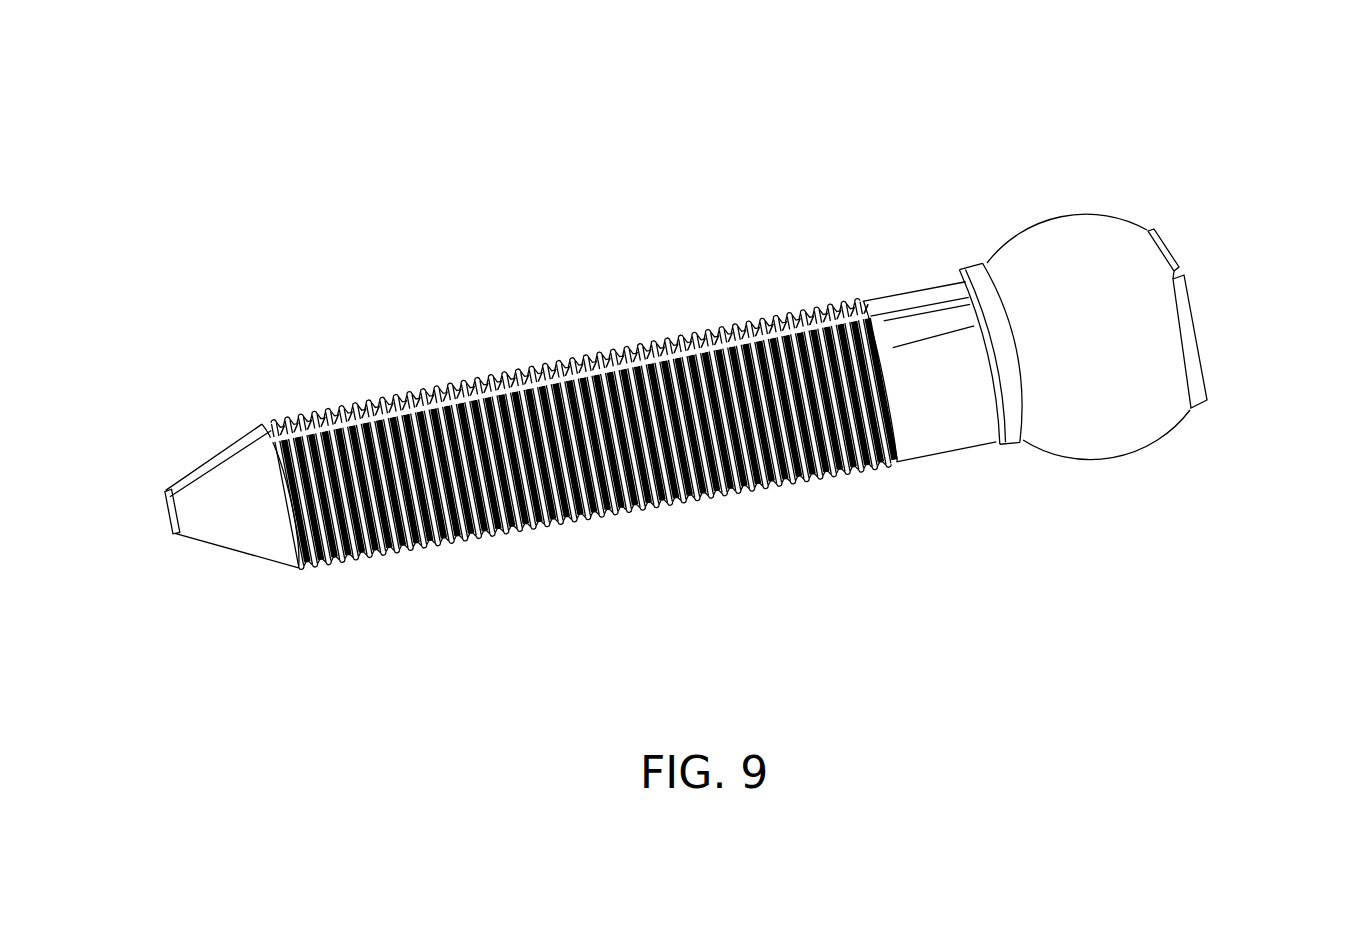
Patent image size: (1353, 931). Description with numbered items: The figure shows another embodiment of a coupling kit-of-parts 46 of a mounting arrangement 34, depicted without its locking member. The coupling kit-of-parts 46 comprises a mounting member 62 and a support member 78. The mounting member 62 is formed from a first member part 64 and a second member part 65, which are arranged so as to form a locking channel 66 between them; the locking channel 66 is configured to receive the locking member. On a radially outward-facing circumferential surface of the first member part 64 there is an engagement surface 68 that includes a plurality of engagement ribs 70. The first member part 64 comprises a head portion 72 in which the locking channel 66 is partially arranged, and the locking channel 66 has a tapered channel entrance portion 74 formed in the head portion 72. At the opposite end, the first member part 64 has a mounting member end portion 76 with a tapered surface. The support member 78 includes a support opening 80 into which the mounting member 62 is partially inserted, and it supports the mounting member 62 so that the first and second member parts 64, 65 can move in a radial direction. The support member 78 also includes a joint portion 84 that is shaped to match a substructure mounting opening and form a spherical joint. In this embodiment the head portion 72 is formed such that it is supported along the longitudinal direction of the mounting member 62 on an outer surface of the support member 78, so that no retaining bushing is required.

The mounting arrangement 34 is at (570, 137).
The coupling kit-of-parts 46 is at (644, 182).
The mounting member 62 is at (376, 333).
The first member part 64 is at (537, 348).
The second member part 65 is at (545, 527).
The locking channel 66 is at (148, 538).
The engagement surface 68 is at (738, 490).
The engagement ribs 70 is at (858, 455).
The head portion 72 is at (1201, 195).
The tapered channel entrance portion 74 is at (1242, 281).
The mounting member end portion 76 is at (186, 410).
The support member 78 is at (1069, 168).
The support opening 80 is at (996, 440).
The joint portion 84 is at (1130, 415).